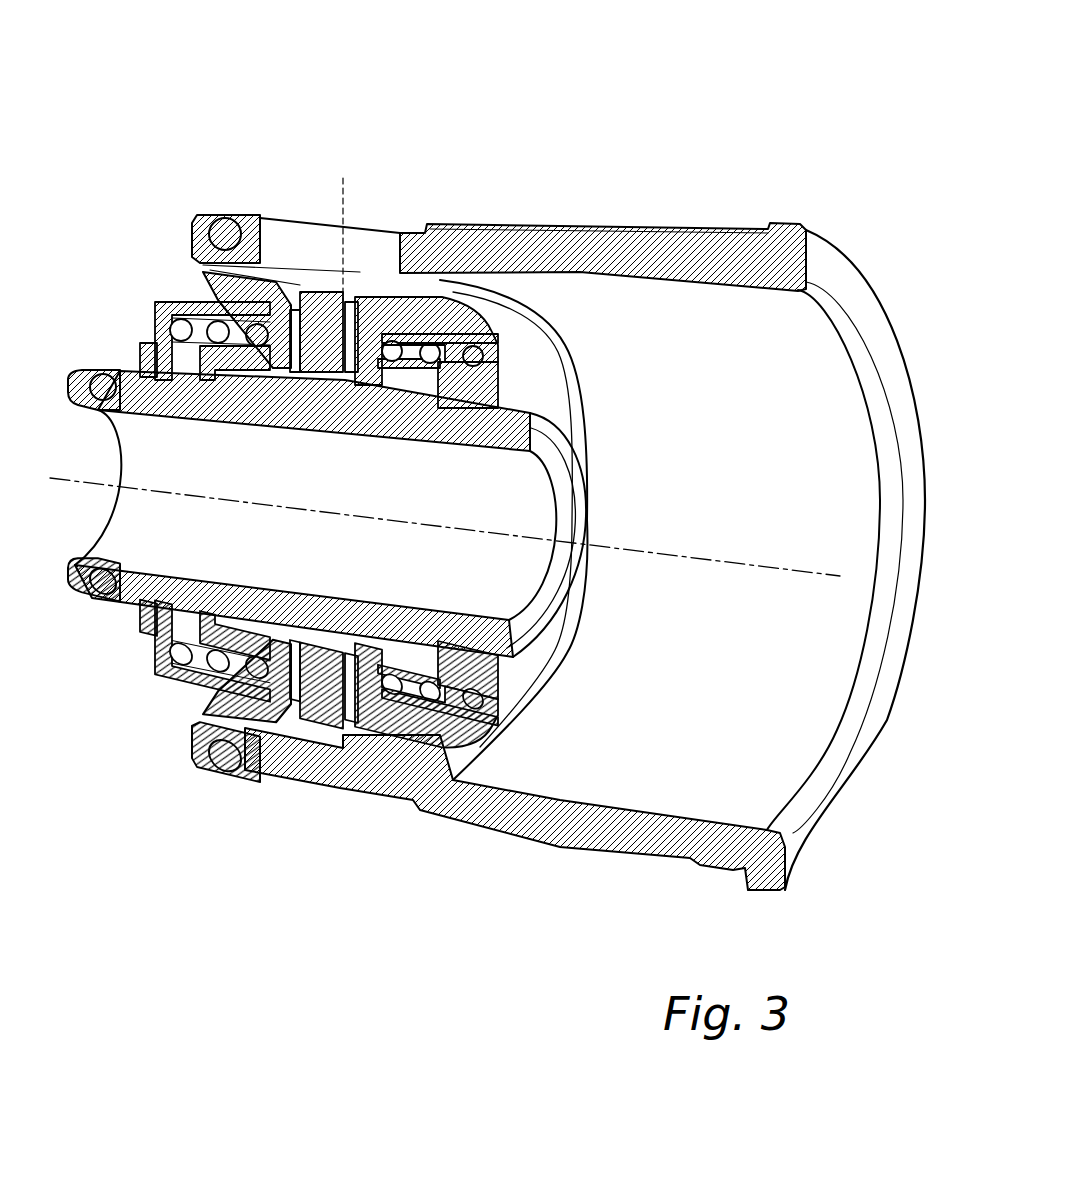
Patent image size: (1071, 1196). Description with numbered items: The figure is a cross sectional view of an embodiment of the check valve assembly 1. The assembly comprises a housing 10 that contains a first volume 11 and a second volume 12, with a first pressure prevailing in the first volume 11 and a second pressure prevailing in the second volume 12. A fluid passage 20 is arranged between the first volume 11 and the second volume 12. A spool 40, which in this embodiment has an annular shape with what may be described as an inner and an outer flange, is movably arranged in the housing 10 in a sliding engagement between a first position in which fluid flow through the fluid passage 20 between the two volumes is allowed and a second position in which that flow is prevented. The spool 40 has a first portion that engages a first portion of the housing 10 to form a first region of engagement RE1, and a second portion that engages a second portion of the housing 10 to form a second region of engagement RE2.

The check valve assembly 1 is at (667, 142).
The housing 10 is at (573, 243).
The first volume 11 is at (360, 300).
The second volume 12 is at (632, 297).
The fluid passage 20 is at (440, 282).
The spool 40 is at (385, 380).
The first region of engagement RE1 is at (380, 298).
The second region of engagement RE2 is at (515, 298).